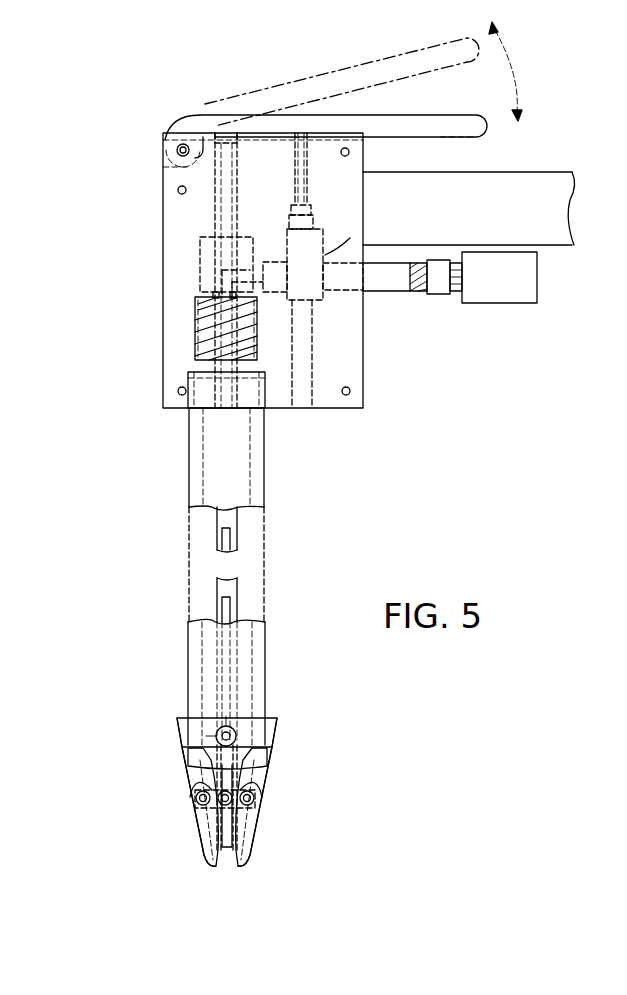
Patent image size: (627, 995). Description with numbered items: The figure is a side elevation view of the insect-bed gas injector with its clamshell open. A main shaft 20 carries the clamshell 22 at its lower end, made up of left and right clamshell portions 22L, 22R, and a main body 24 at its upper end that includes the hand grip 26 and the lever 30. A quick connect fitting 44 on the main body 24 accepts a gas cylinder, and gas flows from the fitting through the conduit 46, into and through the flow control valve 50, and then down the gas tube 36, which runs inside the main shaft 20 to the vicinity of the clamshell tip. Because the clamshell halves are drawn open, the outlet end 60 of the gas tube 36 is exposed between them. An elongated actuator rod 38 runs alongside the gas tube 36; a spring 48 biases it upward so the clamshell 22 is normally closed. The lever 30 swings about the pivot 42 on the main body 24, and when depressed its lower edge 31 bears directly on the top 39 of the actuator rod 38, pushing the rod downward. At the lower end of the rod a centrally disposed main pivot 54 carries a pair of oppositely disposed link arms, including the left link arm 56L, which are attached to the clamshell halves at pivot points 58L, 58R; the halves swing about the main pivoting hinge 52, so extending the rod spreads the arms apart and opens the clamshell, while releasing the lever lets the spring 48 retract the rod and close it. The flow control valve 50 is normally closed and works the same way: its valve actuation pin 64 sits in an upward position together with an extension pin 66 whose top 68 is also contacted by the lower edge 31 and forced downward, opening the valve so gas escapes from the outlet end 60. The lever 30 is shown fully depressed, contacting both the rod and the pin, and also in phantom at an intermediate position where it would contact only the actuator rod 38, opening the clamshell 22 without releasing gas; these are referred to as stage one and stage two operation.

The main shaft 20 is at (264, 465).
The clamshell 22 is at (172, 759).
The left clamshell portion 22L is at (207, 860).
The right clamshell portion 22R is at (247, 860).
The main body 24 is at (163, 207).
The hand grip 26 is at (563, 180).
The lever 30 is at (418, 120).
The lower edge of the lever 31 is at (457, 140).
The gas tube 36 is at (250, 265).
The actuator rod 38 is at (217, 540).
The top of the actuator rod 39 is at (222, 140).
The pivot 42 is at (176, 150).
The quick connect fitting 44 is at (503, 292).
The conduit 46 is at (395, 287).
The spring 48 is at (200, 325).
The flow control valve 50 is at (365, 210).
The main pivoting hinge 52 is at (232, 728).
The main pivot 54 is at (215, 822).
The left link arm 56L is at (190, 785).
The left pivot point 58L is at (197, 800).
The right pivot point 58R is at (255, 803).
The outlet end of the gas tube 60 is at (227, 850).
The valve actuation pin 64 is at (284, 222).
The extension pin 66 is at (295, 163).
The top of the extension pin 68 is at (302, 135).